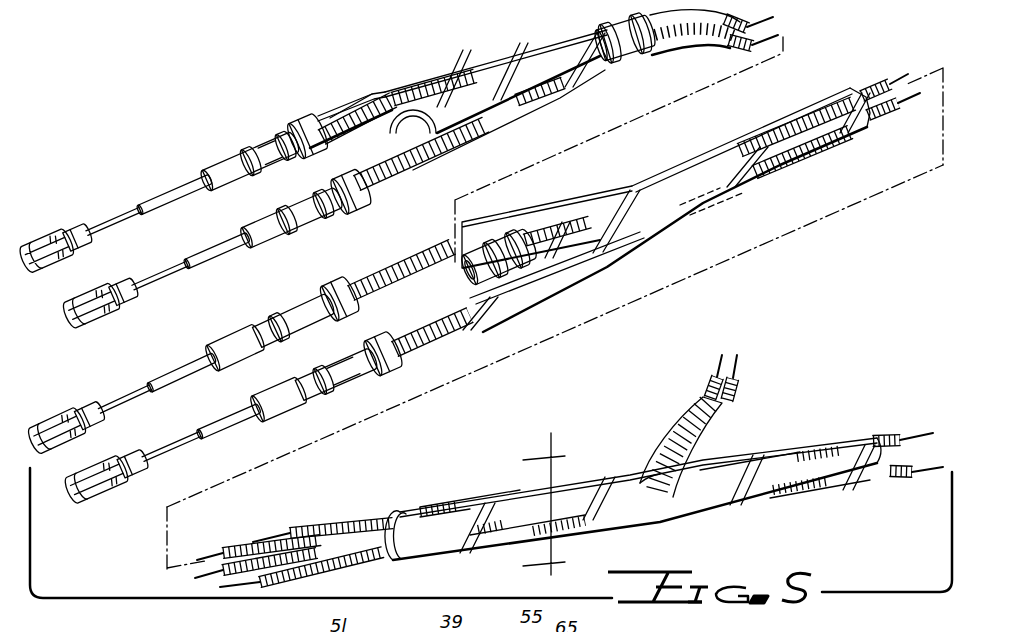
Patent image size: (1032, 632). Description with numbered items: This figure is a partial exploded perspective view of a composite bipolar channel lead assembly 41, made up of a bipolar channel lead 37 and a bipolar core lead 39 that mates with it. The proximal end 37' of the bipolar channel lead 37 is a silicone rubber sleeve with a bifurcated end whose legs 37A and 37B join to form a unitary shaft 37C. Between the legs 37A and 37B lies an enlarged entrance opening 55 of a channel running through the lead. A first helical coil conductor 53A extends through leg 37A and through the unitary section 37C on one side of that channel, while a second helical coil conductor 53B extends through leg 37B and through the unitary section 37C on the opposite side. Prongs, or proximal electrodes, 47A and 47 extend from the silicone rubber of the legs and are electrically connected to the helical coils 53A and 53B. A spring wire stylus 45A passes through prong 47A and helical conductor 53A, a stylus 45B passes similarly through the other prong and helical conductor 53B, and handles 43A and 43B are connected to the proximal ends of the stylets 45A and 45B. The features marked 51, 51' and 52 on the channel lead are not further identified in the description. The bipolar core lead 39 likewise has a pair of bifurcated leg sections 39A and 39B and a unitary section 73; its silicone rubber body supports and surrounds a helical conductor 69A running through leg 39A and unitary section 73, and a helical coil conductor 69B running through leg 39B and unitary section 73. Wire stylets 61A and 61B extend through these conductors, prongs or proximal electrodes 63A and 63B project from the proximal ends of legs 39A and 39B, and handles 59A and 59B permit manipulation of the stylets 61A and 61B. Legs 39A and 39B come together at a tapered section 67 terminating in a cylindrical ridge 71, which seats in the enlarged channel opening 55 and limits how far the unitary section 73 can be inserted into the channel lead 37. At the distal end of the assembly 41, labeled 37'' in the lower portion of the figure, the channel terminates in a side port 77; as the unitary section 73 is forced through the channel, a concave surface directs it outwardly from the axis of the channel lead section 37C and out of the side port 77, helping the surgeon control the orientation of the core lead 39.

The bipolar channel lead 37 is at (676, 210).
The proximal end of bipolar channel lead 37' is at (563, 281).
The cable sheath portion 37'' is at (787, 452).
The leg 37A is at (390, 260).
The leg 37B is at (436, 332).
The unitary shaft 37C is at (760, 132).
The bipolar core lead 39 is at (441, 58).
The bifurcated leg section 39A is at (264, 136).
The bifurcated leg section 39B is at (310, 222).
The bipolar channel lead assembly 41 is at (538, 212).
The handle 43A is at (55, 408).
The handle 43B is at (100, 495).
The spring wire stylus 45A is at (120, 395).
The stylus 45B is at (162, 455).
The connector sleeve 47 is at (224, 425).
The prong or proximal electrode 47A is at (165, 372).
The collar ring 51 is at (285, 263).
The flanged collar ring 51' is at (337, 224).
The sheath 52 is at (568, 215).
The first helical coil conductor 53A is at (322, 298).
The second helical coil conductor 53B is at (372, 368).
The enlarged entrance opening 55 is at (472, 272).
The handle 59A is at (42, 224).
The handle 59B is at (103, 312).
The wire stylet 61A is at (112, 212).
The stylet 61B is at (165, 272).
The prong or proximal electrode 63A is at (172, 192).
The prong or proximal electrode 63B is at (220, 248).
The tapered section 67 is at (517, 106).
The helical conductor 69A is at (366, 103).
The helical coil conductor 69B is at (414, 172).
The cylindrical ridge 71 is at (618, 20).
The unitary section 73 is at (672, 50).
The side port 77 is at (655, 480).